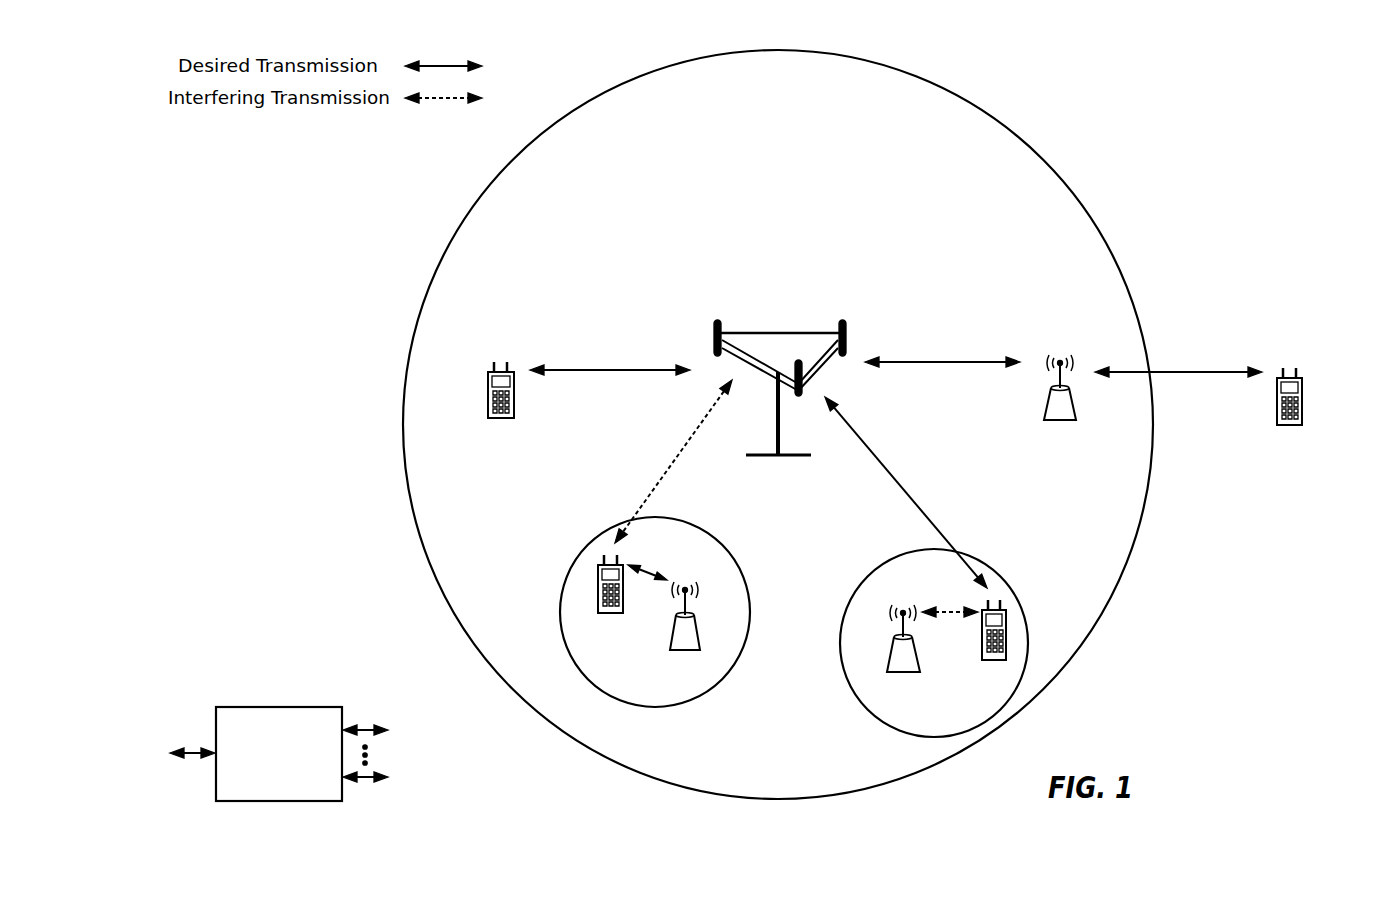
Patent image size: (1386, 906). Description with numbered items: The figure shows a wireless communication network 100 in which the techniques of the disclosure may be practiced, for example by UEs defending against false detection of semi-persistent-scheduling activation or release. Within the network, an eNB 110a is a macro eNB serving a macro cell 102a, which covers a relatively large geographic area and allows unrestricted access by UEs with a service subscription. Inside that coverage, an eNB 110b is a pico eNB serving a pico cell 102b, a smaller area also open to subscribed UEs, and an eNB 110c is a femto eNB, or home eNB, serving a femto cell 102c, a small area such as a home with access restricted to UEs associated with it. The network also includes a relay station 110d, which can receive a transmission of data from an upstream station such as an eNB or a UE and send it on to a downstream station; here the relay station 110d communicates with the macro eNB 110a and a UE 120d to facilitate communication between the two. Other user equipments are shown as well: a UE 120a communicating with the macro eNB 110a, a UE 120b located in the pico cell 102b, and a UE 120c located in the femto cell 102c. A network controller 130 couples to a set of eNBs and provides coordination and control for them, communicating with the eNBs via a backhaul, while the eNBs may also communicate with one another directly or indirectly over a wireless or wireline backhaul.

The wireless communication network 100 is at (1219, 109).
The macro cell 102a is at (1038, 149).
The pico cell 102b is at (731, 551).
The femto cell 102c is at (848, 582).
The macro eNB 110a is at (777, 333).
The pico eNB 110b is at (700, 636).
The femto eNB 110c is at (888, 659).
The relay station 110d is at (1061, 357).
The UE 120a is at (488, 380).
The UE 120b is at (597, 606).
The UE 120c is at (981, 653).
The UE 120d is at (1303, 385).
The network controller 130 is at (277, 706).